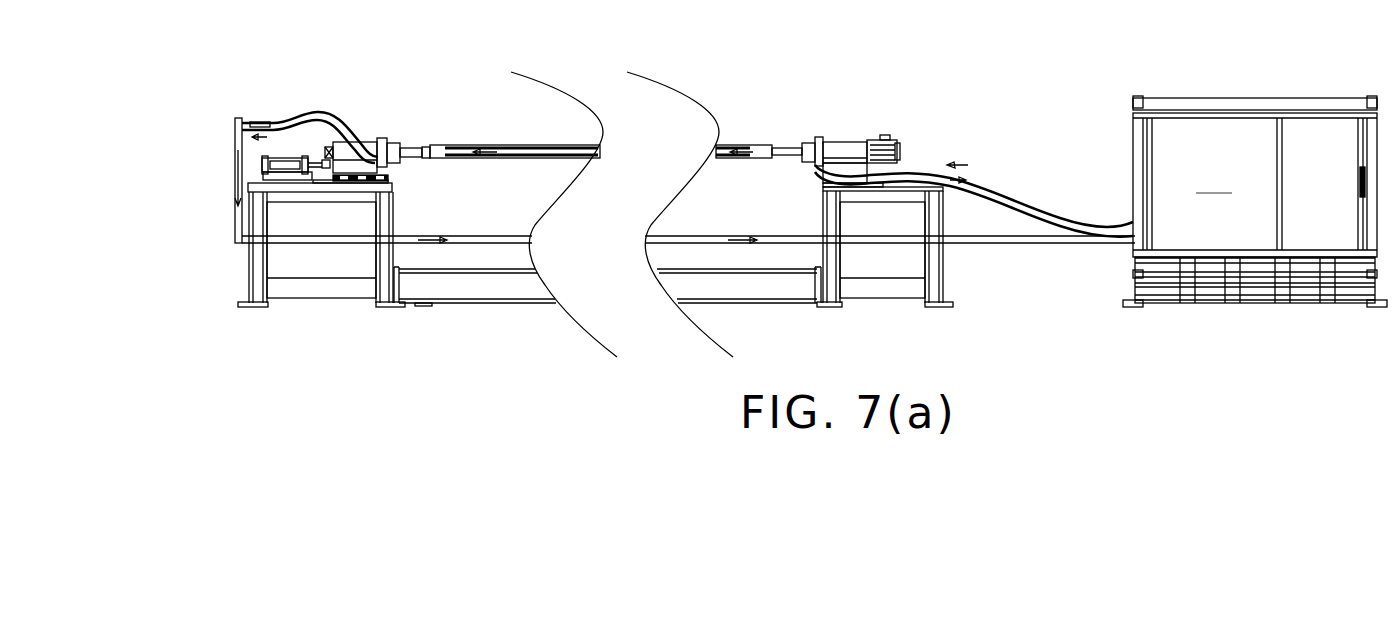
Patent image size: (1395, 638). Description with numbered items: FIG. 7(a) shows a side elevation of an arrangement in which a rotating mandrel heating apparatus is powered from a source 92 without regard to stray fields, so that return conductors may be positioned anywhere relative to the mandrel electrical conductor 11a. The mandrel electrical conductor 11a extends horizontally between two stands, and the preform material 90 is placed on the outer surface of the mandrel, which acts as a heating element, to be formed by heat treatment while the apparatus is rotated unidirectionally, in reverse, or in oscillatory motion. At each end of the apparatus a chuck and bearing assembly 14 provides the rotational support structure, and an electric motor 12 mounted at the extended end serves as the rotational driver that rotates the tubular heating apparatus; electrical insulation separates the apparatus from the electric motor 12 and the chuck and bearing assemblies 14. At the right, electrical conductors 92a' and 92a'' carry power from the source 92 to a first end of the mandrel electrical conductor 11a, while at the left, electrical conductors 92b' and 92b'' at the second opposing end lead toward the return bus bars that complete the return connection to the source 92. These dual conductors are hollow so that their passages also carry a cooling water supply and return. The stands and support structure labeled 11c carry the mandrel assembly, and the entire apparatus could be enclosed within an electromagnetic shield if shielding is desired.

The mandrel electrical conductor 11a is at (460, 158).
The conveyor rail 11c is at (235, 160).
The electric motor 12 is at (883, 125).
The chuck and bearing assembly 14 is at (393, 128).
The preform material 90 is at (745, 146).
The source 92 is at (1255, 201).
The electrical conductor 92a' is at (974, 180).
The electrical conductor 92a'' is at (1062, 244).
The electrical conductor 92b' is at (317, 113).
The electrical conductor 92b'' is at (287, 92).